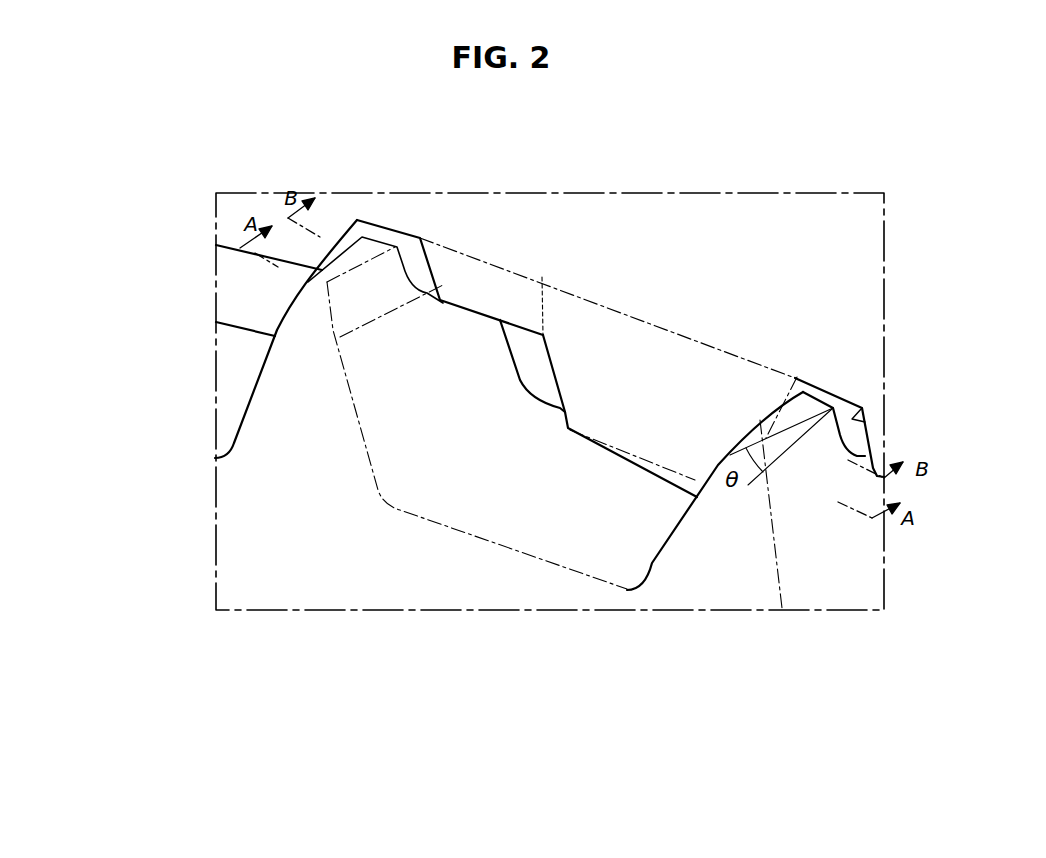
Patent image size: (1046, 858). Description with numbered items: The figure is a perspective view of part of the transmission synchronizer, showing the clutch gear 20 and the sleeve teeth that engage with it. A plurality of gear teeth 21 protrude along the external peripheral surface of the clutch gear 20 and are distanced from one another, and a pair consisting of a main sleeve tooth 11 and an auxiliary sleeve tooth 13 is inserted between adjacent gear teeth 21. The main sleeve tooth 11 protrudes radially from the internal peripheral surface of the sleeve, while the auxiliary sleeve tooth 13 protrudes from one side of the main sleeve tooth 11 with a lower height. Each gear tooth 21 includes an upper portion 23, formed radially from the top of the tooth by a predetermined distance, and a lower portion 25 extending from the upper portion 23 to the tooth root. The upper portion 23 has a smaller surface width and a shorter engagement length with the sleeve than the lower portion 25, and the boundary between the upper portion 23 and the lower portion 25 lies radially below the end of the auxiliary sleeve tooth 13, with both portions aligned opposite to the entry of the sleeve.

The main sleeve tooth 11 is at (640, 387).
The auxiliary sleeve tooth 13 is at (502, 287).
The clutch gear 20 is at (432, 545).
The gear tooth 21 is at (122, 278).
The upper portion 23 is at (343, 307).
The lower portion 25 is at (377, 370).